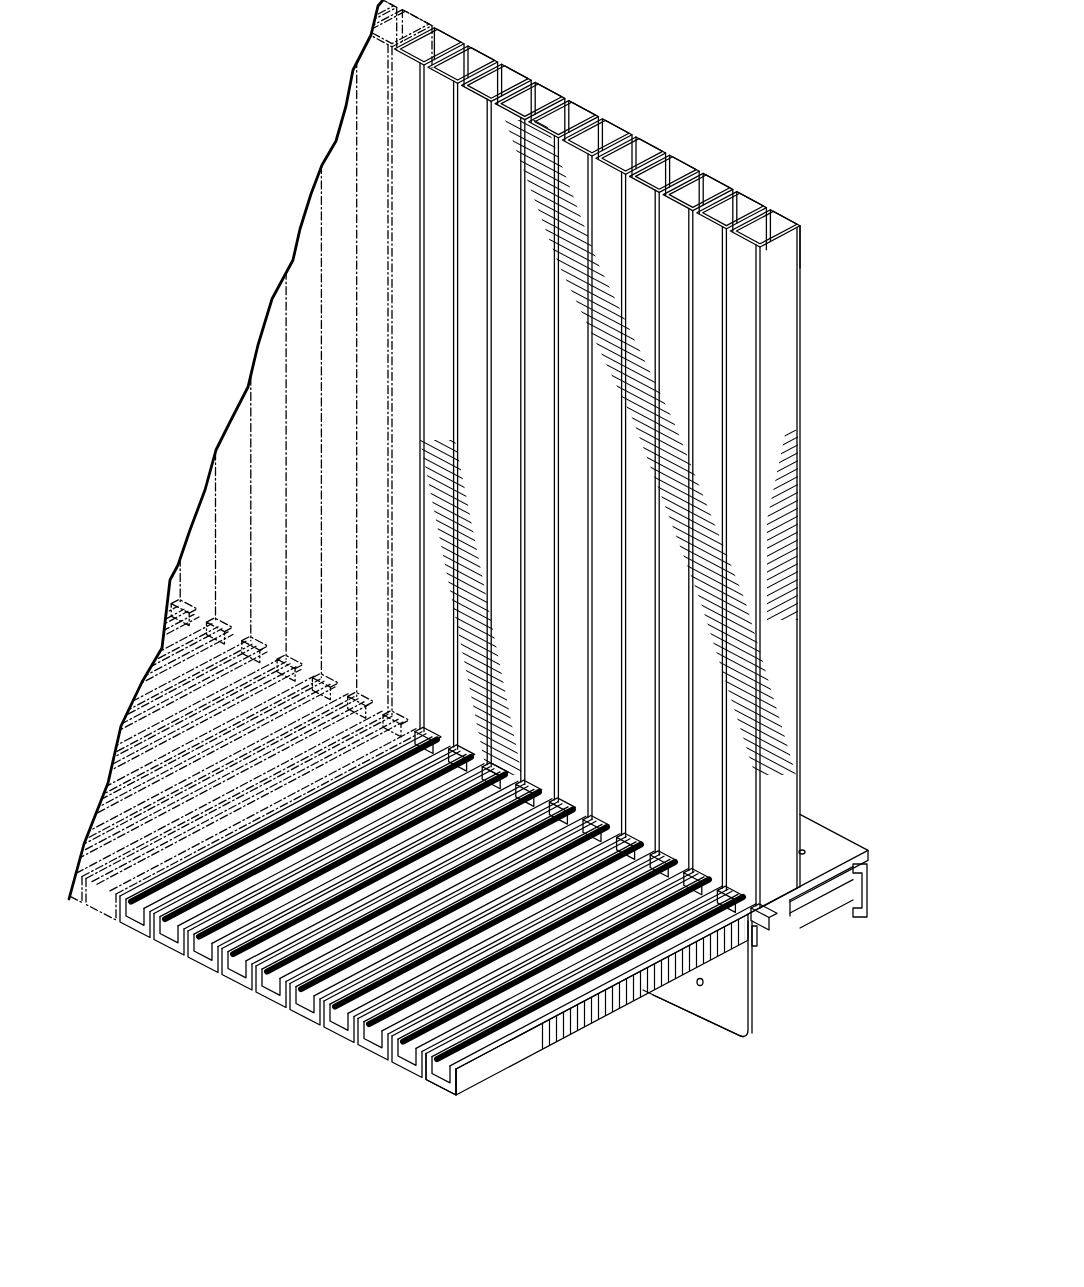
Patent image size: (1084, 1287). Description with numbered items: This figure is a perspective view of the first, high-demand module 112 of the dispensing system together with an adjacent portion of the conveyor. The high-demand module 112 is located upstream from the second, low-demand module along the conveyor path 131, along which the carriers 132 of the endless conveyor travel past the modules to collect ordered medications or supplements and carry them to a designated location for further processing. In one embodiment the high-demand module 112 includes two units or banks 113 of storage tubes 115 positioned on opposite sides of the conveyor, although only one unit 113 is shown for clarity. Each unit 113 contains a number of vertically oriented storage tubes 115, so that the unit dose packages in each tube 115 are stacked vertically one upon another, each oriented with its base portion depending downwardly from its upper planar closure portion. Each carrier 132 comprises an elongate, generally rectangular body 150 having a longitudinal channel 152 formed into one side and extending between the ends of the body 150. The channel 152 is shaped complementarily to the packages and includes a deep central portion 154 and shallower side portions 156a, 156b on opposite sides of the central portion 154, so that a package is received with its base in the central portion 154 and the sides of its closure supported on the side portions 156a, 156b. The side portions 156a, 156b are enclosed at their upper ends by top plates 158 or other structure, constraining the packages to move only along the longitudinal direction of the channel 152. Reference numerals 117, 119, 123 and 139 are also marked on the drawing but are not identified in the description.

The high-demand module 112 is at (208, 119).
The unit of storage tubes 113 is at (696, 110).
The storage tube 115 is at (708, 377).
The slat channel top end 119 is at (782, 222).
The base assembly 117 is at (851, 950).
The fastener hole 123 is at (800, 883).
The conveyor path 131 is at (808, 913).
The gusset bracket 139 is at (750, 992).
The body 150 is at (555, 1040).
The longitudinal channel 152 is at (437, 1070).
The central portion 154 is at (440, 1070).
The side portion 156a is at (247, 982).
The side portion 156b is at (290, 997).
The top plate 158 is at (473, 1033).
The carrier 132 is at (509, 1075).